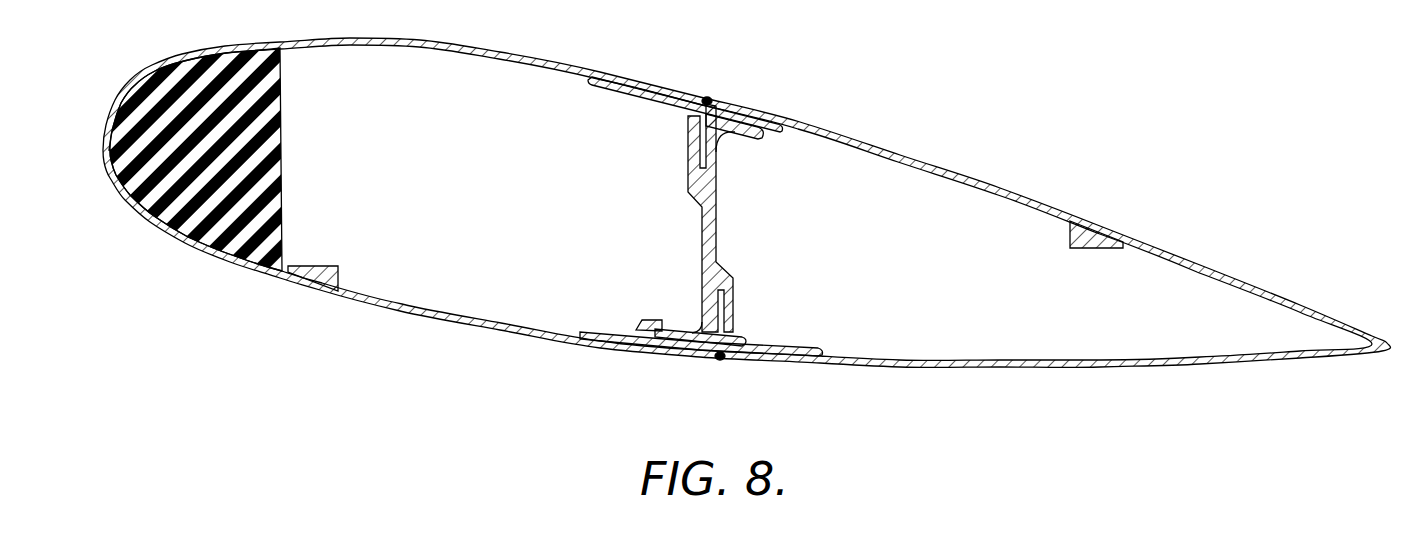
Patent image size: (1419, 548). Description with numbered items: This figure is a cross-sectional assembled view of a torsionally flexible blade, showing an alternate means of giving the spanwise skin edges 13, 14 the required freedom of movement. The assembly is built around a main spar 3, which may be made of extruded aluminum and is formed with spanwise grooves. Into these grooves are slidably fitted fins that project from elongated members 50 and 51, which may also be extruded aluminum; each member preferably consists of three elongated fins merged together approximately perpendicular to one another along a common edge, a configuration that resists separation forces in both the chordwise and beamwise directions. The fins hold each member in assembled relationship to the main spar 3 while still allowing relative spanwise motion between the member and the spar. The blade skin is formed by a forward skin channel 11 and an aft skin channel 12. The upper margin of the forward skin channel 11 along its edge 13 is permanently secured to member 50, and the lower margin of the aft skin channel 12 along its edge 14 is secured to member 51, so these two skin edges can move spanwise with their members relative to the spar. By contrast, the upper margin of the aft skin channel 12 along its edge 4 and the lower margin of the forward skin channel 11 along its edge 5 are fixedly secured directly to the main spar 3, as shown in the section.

The main spar 3 is at (715, 215).
The edge 4 is at (708, 100).
The edge 5 is at (718, 356).
The forward skin channel 11 is at (133, 92).
The aft skin channel 12 is at (1295, 293).
The spanwise skin edge 13 is at (705, 96).
The spanwise skin edge 14 is at (720, 358).
The elongated member 50 is at (617, 83).
The elongated member 51 is at (800, 343).